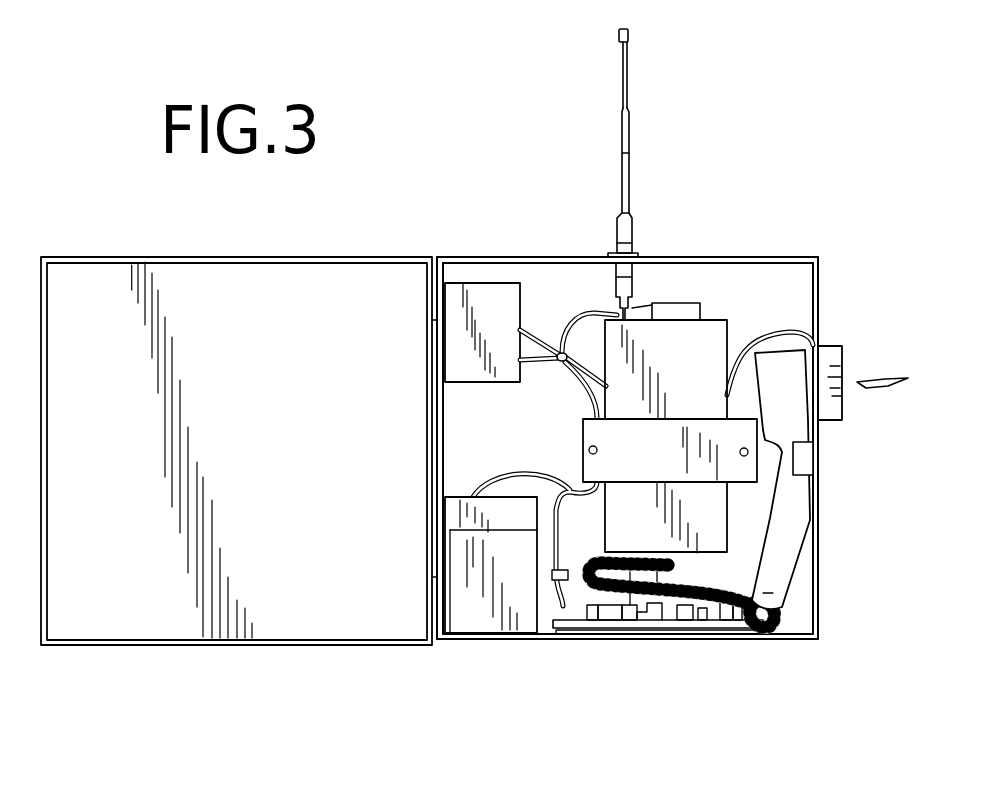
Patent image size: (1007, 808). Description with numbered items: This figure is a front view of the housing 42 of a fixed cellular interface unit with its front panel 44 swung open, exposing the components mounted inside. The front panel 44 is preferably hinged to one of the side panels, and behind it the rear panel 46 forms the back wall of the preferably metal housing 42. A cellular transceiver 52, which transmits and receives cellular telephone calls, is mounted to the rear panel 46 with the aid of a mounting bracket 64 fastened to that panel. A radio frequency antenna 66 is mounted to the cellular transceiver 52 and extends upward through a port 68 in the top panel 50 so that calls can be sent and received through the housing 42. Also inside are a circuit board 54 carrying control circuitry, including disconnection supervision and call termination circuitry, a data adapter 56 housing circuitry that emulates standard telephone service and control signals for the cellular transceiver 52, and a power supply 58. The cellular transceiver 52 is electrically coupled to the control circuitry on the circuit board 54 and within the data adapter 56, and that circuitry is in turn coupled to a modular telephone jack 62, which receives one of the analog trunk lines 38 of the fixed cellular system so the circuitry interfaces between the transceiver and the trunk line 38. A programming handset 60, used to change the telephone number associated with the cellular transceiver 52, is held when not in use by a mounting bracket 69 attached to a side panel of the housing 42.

The trunk line 38 is at (889, 390).
The housing 42 is at (713, 150).
The front panel 44 is at (262, 425).
The rear panel 46 is at (765, 300).
The top panel 50 is at (762, 257).
The cellular transceiver 52 is at (707, 337).
The circuit board 54 is at (660, 622).
The data adapter 56 is at (475, 615).
The power supply 58 is at (475, 297).
The programming handset 60 is at (788, 370).
The modular telephone jack 62 is at (837, 368).
The mounting bracket 64 is at (672, 467).
The radio frequency antenna 66 is at (622, 164).
The port 68 is at (637, 256).
The mounting bracket 69 is at (798, 463).